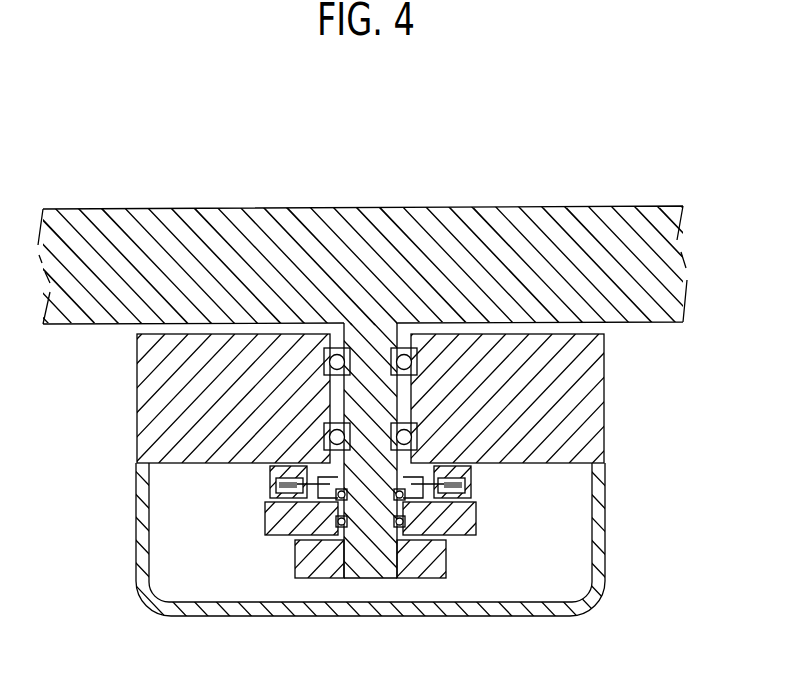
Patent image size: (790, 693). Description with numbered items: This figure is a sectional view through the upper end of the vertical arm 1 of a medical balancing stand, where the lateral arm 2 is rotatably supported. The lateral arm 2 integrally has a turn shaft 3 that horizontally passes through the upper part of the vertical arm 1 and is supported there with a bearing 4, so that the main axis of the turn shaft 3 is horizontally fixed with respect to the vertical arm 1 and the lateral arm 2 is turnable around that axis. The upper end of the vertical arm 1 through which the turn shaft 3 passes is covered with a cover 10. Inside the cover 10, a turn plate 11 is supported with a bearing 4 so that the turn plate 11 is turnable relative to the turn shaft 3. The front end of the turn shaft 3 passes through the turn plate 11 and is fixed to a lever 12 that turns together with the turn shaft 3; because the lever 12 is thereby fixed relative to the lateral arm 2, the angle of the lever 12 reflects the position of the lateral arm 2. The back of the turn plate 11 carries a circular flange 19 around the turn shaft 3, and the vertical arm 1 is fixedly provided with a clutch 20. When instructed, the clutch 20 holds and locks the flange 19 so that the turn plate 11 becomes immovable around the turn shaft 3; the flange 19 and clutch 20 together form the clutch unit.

The vertical arm 1 is at (162, 393).
The lateral arm 2 is at (463, 208).
The turn shaft 3 is at (368, 578).
The bearing 4 is at (418, 432).
The cover 10 is at (137, 522).
The turn plate 11 is at (477, 529).
The lever 12 is at (313, 578).
The circular flange 19 is at (477, 505).
The clutch 20 is at (472, 479).